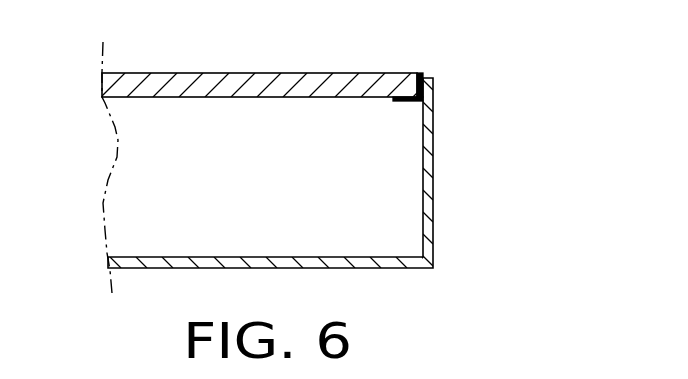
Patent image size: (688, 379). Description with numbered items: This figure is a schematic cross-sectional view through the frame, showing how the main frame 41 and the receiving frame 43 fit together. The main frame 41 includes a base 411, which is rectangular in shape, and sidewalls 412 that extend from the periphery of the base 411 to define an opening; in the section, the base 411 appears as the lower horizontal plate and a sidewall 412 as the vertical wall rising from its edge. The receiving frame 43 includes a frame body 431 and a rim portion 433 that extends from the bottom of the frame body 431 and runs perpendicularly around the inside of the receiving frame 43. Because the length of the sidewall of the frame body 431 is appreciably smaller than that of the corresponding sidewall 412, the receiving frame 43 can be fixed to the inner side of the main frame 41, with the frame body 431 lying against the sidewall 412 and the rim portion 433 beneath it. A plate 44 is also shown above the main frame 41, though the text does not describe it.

The cover plate 44 is at (253, 74).
The receiving frame 43 is at (492, 95).
The frame body 431 is at (424, 74).
The rim portion 433 is at (410, 100).
The main frame 41 is at (350, 188).
The sidewall 412 is at (434, 216).
The base 411 is at (400, 268).